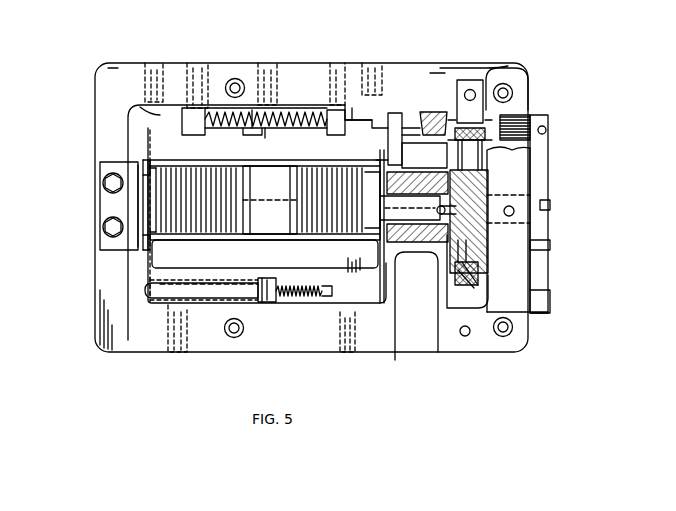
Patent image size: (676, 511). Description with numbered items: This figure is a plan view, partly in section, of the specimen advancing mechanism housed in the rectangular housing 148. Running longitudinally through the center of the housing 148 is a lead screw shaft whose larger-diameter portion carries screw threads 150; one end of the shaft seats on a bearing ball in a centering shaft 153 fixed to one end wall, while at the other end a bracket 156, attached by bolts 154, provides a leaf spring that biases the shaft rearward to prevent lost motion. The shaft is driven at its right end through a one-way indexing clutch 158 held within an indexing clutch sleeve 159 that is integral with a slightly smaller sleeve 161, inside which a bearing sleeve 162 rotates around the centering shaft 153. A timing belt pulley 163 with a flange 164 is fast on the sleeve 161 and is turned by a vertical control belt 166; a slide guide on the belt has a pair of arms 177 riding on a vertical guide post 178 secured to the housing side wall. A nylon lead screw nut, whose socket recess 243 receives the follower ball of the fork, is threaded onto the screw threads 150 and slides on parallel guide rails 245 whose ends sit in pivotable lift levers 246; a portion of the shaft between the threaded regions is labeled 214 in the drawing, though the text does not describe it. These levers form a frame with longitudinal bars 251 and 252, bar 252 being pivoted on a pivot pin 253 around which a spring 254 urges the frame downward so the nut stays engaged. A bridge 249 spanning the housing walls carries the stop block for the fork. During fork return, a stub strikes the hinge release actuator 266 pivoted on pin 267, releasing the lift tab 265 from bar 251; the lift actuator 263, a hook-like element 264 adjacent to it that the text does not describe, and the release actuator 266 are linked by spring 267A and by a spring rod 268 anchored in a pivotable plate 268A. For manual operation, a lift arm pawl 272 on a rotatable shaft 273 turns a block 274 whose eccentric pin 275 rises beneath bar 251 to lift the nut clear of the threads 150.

The housing 148 is at (107, 300).
The screw threads 150 is at (175, 200).
The centering shaft 153 is at (478, 215).
The bolts 154 is at (107, 223).
The bracket 156 is at (103, 170).
The one-way indexing clutch 158 is at (413, 187).
The indexing clutch sleeve 159 is at (418, 240).
The sleeve 161 is at (480, 237).
The bearing sleeve 162 is at (482, 205).
The timing belt pulley 163 is at (472, 263).
The flange 164 is at (411, 340).
The control belt 166 is at (480, 133).
The arms 177 is at (478, 80).
The vertical guide post 178 is at (512, 75).
The piston 214 is at (240, 230).
The recess 243 is at (300, 238).
The guide rails 245 is at (323, 172).
The lift levers 246 is at (150, 170).
The bridge 249 is at (428, 73).
The longitudinal bar 251 is at (255, 122).
The longitudinal bar 252 is at (282, 271).
The pivot pin 253 is at (157, 300).
The spring 254 is at (316, 298).
The lift actuator 263 is at (190, 108).
The hook 264 is at (203, 90).
The lift tab 265 is at (300, 108).
The hinge release actuator 266 is at (333, 108).
The pin 267 is at (350, 108).
The spring 267A is at (250, 118).
The spring rod 268 is at (268, 112).
The plate 268A is at (252, 110).
The lift arm pawl 272 is at (543, 160).
The rotatable shaft 273 is at (460, 120).
The block 274 is at (430, 125).
The pin 275 is at (396, 112).